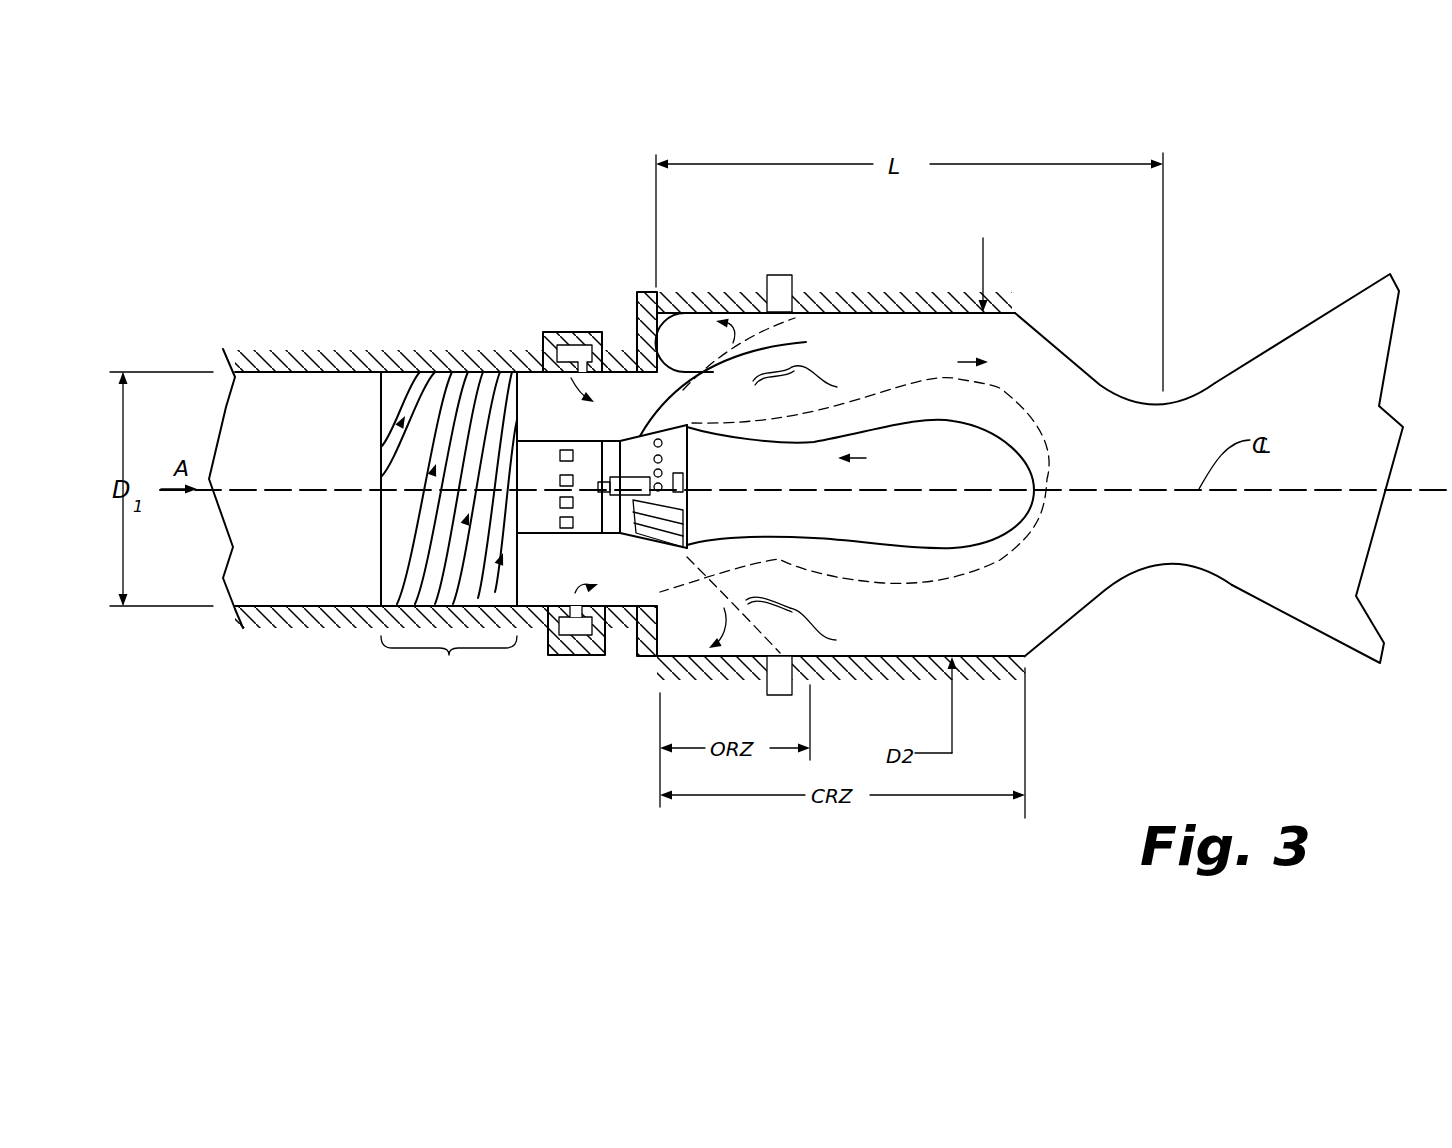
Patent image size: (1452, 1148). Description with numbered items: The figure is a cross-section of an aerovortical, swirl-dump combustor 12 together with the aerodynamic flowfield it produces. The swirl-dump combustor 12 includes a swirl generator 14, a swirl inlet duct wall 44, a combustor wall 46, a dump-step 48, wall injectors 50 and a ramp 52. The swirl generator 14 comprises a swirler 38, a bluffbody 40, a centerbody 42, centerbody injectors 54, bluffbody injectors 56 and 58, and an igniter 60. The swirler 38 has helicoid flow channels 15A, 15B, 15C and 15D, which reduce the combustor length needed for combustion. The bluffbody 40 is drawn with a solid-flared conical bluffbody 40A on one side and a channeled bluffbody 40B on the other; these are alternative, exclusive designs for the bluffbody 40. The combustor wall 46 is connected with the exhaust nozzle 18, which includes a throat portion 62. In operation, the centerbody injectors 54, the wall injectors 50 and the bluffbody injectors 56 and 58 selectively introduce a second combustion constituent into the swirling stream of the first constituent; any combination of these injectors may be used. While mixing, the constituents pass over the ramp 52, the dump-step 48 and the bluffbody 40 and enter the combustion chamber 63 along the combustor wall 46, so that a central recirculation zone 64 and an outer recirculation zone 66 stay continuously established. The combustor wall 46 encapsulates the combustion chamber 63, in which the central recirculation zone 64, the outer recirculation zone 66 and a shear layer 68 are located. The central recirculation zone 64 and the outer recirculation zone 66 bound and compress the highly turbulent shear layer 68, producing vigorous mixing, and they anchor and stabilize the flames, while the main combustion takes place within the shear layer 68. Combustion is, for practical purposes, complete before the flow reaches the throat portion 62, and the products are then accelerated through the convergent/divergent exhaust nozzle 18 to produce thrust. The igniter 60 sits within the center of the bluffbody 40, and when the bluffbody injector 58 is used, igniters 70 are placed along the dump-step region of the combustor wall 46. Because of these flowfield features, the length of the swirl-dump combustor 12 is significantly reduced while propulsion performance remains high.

The swirl-dump combustor 12 is at (264, 330).
The swirl generator 14 is at (451, 336).
The helicoid flow channel 15A is at (383, 445).
The helicoid flow channel 15B is at (383, 445).
The helicoid flow channel 15C is at (383, 564).
The helicoid flow channel 15D is at (495, 578).
The exhaust nozzle 18 is at (1315, 320).
The swirler 38 is at (449, 528).
The bluffbody 40 is at (623, 403).
The solid-flared conical bluffbody 40A is at (744, 377).
The channeled bluffbody 40B is at (650, 552).
The centerbody 42 is at (523, 440).
The swirl inlet duct wall 44 is at (320, 352).
The combustor wall 46 is at (720, 303).
The dump-step 48 is at (695, 342).
The wall injectors 50 is at (545, 333).
The ramp 52 is at (640, 345).
The centerbody injectors 54 is at (567, 530).
The bluffbody injector 56 is at (662, 443).
The bluffbody injector 58 is at (689, 484).
The igniter 60 is at (622, 497).
The throat portion 62 is at (1168, 575).
The combustion chamber 63 is at (814, 286).
The CRZ 64 is at (950, 519).
The ORZ 66 is at (655, 618).
The shear layer 68 is at (806, 506).
The igniters 70 is at (772, 275).